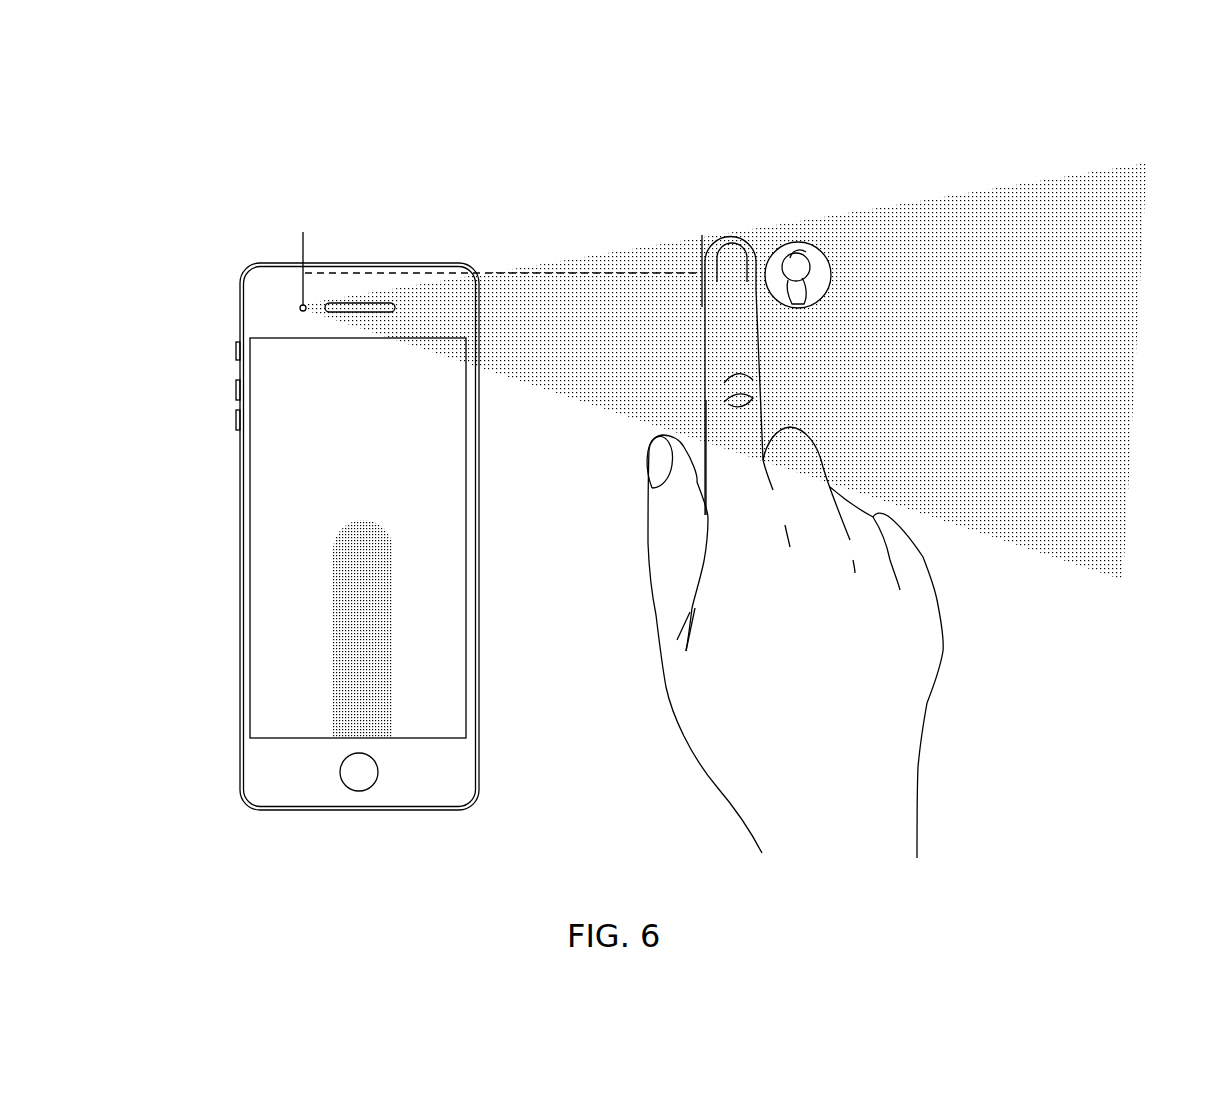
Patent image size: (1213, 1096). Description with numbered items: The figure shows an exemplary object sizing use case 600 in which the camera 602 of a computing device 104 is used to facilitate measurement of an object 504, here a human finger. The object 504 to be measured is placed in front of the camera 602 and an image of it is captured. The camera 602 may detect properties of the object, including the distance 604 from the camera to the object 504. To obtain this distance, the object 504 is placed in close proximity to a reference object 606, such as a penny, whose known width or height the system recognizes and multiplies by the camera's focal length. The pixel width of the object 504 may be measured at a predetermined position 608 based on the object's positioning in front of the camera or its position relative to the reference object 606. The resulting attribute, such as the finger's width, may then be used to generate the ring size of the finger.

The object sizing use case 600 is at (1143, 82).
The computing device 104 is at (252, 263).
The camera 602 is at (303, 310).
The distance 604 is at (516, 272).
The object 504 is at (735, 235).
The reference object 606 is at (822, 298).
The position 608 is at (395, 657).